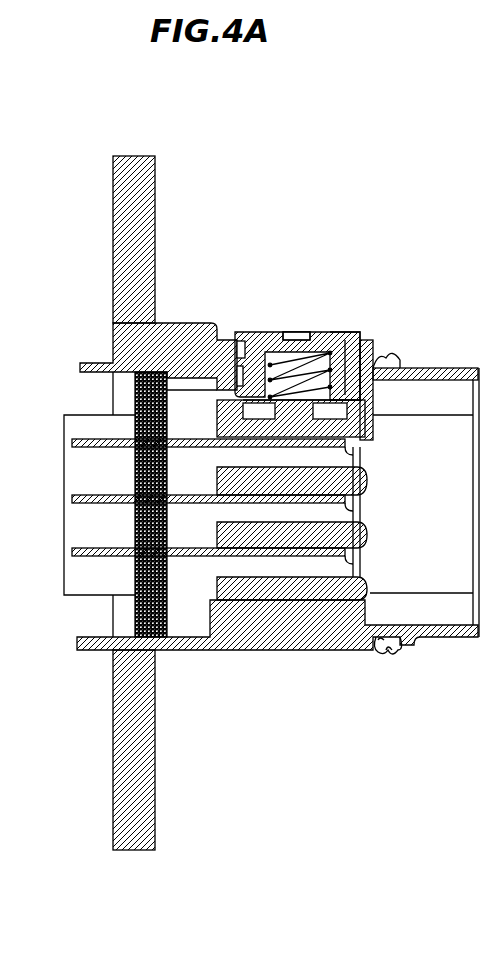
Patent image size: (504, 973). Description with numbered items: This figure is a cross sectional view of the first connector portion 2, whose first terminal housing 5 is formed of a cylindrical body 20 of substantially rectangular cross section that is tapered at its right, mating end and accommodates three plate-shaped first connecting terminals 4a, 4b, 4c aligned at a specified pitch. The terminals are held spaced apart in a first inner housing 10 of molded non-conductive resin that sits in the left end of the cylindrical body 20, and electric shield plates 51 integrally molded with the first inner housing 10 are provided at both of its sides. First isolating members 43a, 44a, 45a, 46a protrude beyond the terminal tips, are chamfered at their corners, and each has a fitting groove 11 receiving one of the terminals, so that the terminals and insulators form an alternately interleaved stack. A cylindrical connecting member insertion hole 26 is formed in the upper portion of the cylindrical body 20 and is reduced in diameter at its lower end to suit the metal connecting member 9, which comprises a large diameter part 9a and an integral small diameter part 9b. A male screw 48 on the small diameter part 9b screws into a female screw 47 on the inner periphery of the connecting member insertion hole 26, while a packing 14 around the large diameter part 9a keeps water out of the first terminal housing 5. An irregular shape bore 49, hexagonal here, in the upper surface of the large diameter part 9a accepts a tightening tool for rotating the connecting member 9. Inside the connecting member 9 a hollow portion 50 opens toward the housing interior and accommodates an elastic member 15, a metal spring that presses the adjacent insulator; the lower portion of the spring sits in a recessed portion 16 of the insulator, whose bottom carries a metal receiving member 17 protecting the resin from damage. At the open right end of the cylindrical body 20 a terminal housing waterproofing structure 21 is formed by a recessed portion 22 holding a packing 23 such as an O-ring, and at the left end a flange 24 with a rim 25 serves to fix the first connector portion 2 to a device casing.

The first connector portion 2 is at (343, 214).
The first connecting terminal 4a is at (72, 441).
The first connecting terminal 4b is at (72, 497).
The first connecting terminal 4c is at (72, 550).
The first terminal housing 5 is at (176, 322).
The connecting member 9 is at (252, 330).
The large diameter part 9a is at (334, 332).
The small diameter part 9b is at (350, 397).
The first inner housing 10 is at (135, 606).
The fitting groove 11 is at (362, 452).
The packing 14 is at (233, 340).
The elastic member 15 is at (272, 350).
The recessed portion 16 is at (217, 398).
The receiving member 17 is at (372, 415).
The cylindrical body 20 is at (462, 368).
The terminal housing waterproofing structure 21 is at (389, 671).
The recessed portion 22 is at (392, 652).
The packing 23 is at (384, 655).
The flange 24 is at (145, 157).
The rim 25 is at (113, 233).
The connecting member insertion hole 26 is at (366, 340).
The first isolating member 43a is at (370, 428).
The first isolating member 44a is at (372, 484).
The first isolating member 45a is at (372, 538).
The first isolating member 46a is at (375, 582).
The female screw 47 is at (346, 333).
The male screw 48 is at (388, 358).
The irregular shape bore 49 is at (298, 332).
The hollow portion 50 is at (135, 388).
The electric shield plate 51 is at (64, 583).